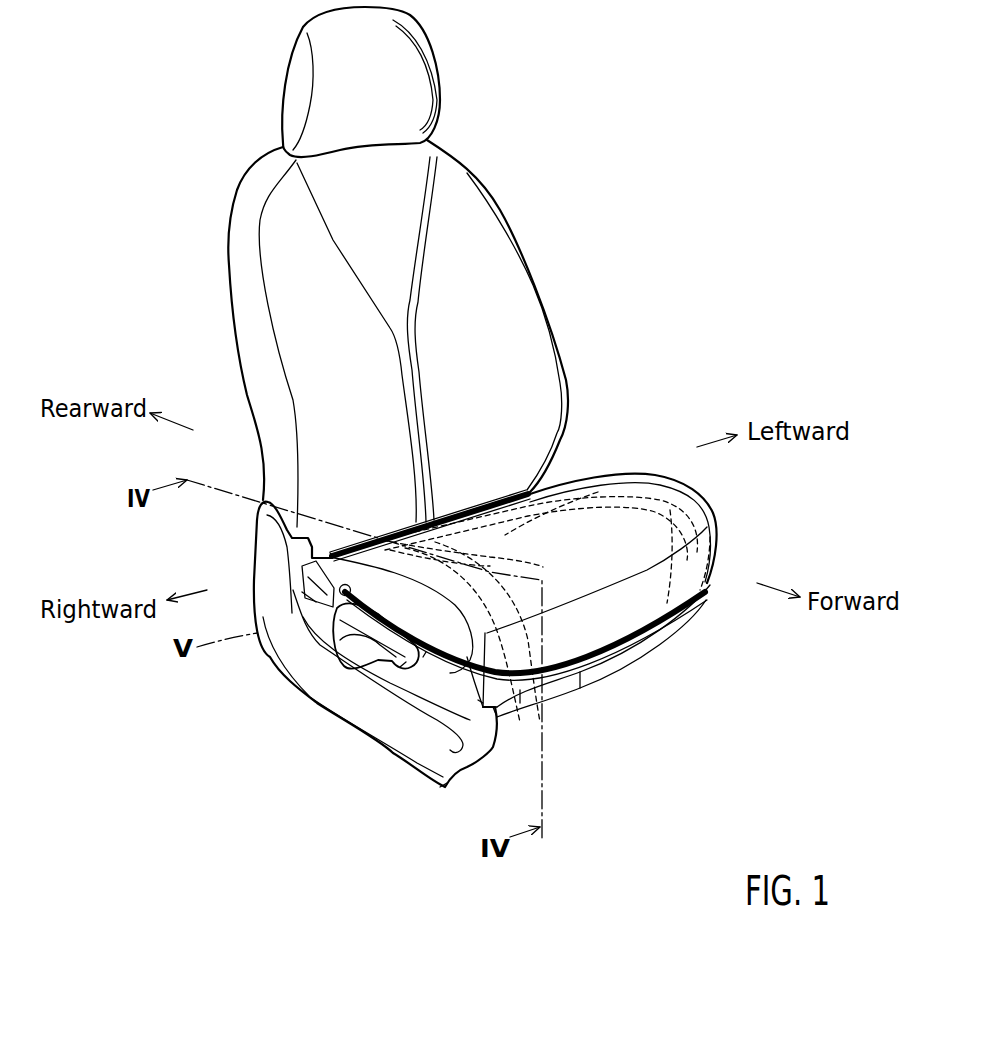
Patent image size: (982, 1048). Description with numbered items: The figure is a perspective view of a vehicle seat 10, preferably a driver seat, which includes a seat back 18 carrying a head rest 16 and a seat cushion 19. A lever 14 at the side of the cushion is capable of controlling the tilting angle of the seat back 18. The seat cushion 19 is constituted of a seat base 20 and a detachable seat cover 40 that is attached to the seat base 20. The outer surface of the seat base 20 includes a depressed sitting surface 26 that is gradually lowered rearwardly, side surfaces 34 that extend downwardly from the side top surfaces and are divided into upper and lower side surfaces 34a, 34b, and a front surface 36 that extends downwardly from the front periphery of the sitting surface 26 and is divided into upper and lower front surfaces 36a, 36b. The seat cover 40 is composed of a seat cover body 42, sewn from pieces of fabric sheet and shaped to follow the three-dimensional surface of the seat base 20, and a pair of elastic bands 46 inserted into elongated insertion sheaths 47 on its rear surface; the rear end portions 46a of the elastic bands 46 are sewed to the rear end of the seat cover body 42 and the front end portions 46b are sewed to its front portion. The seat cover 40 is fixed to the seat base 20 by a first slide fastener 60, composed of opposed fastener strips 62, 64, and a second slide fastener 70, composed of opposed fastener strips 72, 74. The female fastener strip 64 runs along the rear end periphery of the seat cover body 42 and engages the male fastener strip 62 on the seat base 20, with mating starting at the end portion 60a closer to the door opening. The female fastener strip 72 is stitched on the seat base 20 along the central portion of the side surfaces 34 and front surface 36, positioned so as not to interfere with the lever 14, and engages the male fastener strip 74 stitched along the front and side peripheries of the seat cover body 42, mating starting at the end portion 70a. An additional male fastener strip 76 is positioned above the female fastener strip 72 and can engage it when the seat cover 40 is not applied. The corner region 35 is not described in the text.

The vehicle seat 10 is at (626, 276).
The lever 14 is at (307, 680).
The head rest 16 is at (297, 77).
The seat back 18 is at (247, 287).
The seat cushion 19 is at (648, 472).
The seat base 20 is at (570, 688).
The sitting surface 26 is at (610, 580).
The side surfaces 34 is at (343, 813).
The upper side surface 34a is at (400, 667).
The lower side surface 34b is at (423, 657).
The front corner portion 35 is at (713, 581).
The front surface 36 is at (690, 743).
The upper front surface 36a is at (603, 627).
The lower front surface 36b is at (587, 667).
The seat cover 40 is at (713, 537).
The seat cover body 42 is at (653, 608).
The elastic bands 46 is at (645, 518).
The rear end portions of the elastic bands 46a is at (540, 488).
The front end portions of the elastic bands 46b is at (712, 553).
The elongated insertion sheaths 47 is at (600, 490).
The first slide fastener 60 is at (530, 385).
The end portion of the first slide fastener 60a is at (338, 540).
The male fastener strip 62 is at (507, 490).
The female fastener strip 64 is at (462, 512).
The second slide fastener 70 is at (463, 863).
The end portion of the second slide fastener 70a is at (322, 585).
The female fastener strip 72 is at (478, 700).
The male fastener strip 74 is at (442, 665).
The additional male fastener strip 76 is at (500, 720).